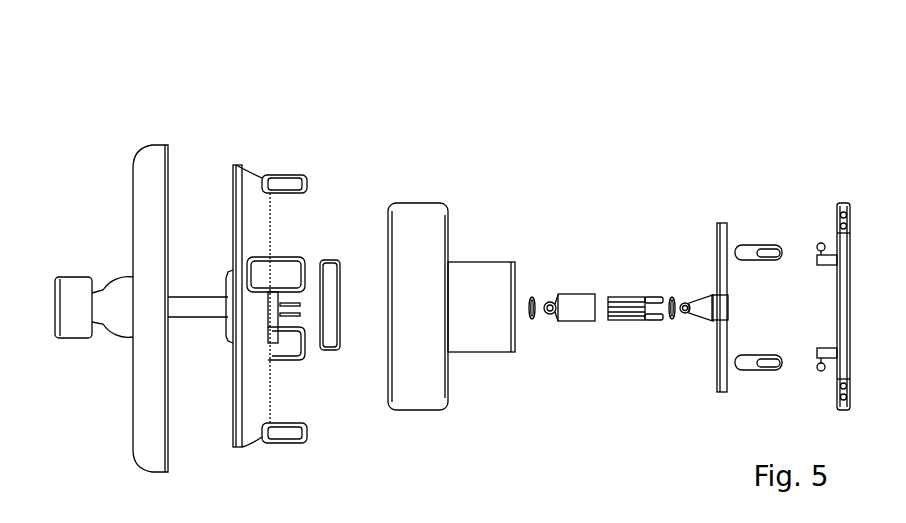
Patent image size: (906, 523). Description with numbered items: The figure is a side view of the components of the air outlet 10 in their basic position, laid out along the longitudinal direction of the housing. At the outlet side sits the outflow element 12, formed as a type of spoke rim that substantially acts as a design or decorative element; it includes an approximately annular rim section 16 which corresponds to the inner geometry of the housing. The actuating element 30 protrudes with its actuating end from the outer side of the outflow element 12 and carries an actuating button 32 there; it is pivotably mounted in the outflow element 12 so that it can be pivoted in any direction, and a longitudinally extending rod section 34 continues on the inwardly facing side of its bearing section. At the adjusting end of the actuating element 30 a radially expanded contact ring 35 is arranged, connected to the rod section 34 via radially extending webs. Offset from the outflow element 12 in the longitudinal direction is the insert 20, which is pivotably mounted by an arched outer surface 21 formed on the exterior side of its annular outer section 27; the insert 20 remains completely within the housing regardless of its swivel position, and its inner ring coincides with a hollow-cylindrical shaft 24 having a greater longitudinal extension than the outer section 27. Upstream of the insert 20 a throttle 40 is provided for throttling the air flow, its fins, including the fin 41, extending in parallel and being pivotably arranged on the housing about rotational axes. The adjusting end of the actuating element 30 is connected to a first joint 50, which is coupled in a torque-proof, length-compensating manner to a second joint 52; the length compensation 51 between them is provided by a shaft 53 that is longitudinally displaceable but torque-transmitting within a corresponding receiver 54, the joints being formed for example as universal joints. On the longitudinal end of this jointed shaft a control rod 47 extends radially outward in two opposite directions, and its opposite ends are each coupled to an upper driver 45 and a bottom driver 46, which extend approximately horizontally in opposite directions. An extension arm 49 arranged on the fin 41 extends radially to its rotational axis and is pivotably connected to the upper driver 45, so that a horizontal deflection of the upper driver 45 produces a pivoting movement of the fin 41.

The air outlet 10 is at (518, 142).
The outflow element 12 is at (292, 112).
The rim section 16 is at (246, 410).
The insert 20 is at (460, 210).
The outer surface 21 is at (413, 410).
The shaft 24 is at (495, 342).
The outer section 27 is at (427, 375).
The actuating element 30 is at (93, 262).
The actuating button 32 is at (82, 325).
The rod section 34 is at (203, 318).
The contact ring 35 is at (330, 348).
The throttle 40 is at (775, 172).
The fin 41 is at (838, 292).
The upper driver 45 is at (750, 250).
The bottom driver 46 is at (747, 368).
The control rod 47 is at (716, 356).
The extension arm 49 is at (822, 246).
The first joint 50 is at (540, 284).
The length compensation 51 is at (596, 284).
The second joint 52 is at (668, 284).
The shaft 53 is at (625, 322).
The receiver 54 is at (582, 322).